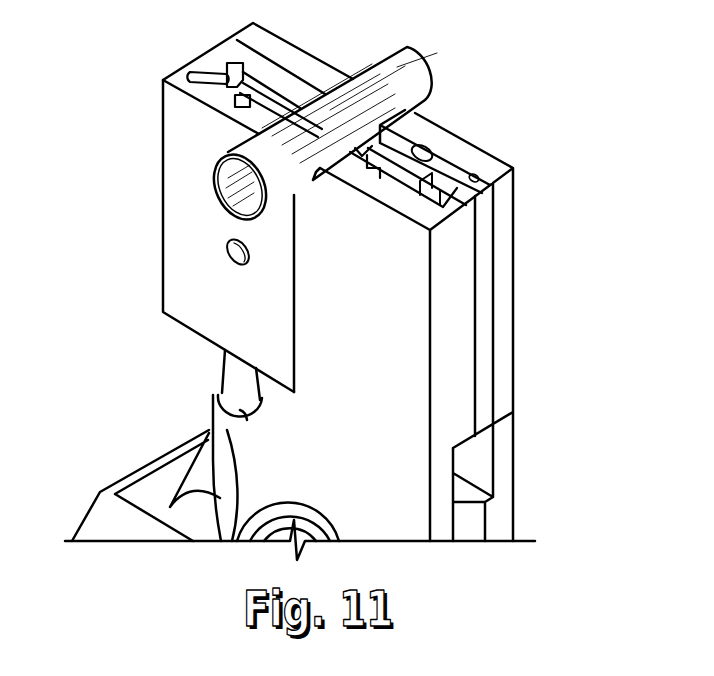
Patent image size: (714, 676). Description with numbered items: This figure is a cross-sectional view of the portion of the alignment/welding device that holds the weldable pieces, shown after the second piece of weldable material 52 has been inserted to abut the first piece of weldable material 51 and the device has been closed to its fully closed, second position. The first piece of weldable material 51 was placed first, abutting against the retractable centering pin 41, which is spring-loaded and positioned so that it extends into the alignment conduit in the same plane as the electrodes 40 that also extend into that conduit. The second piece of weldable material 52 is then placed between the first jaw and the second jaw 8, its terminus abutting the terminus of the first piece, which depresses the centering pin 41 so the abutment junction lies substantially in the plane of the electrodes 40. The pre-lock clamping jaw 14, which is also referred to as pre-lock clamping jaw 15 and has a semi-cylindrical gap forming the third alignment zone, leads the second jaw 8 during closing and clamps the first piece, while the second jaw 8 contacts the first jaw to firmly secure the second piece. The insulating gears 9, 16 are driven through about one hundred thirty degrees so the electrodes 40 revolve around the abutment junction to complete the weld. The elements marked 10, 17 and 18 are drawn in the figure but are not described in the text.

The second jaw 8 is at (366, 346).
The insulating gear 9 is at (415, 193).
The guide strip 10 is at (448, 170).
The pre-lock clamping jaw 14 is at (428, 133).
The pre-lock clamping jaw 15 is at (237, 308).
The insulating gear 16 is at (243, 70).
The guide groove face 17 is at (265, 67).
The rear rail 18 is at (307, 67).
The electrodes 40 is at (357, 167).
The retractable centering pin 41 is at (257, 100).
The first piece of weldable material 51 is at (420, 53).
The second piece of weldable material 52 is at (217, 175).